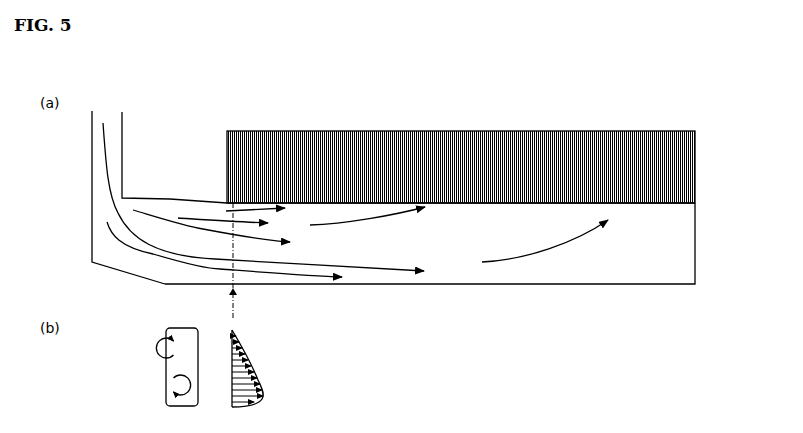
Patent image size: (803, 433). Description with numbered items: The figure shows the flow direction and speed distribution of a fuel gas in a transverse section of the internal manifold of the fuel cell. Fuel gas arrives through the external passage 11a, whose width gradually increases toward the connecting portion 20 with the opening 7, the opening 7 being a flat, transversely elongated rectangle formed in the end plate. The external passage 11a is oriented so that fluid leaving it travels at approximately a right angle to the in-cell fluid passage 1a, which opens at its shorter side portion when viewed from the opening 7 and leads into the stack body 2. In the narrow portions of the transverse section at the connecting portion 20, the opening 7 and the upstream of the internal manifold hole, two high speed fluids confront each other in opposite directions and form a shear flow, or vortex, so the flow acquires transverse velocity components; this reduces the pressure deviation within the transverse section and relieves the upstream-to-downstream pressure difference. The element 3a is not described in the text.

The external passage 11a is at (116, 128).
The stack body 2 is at (317, 130).
The in-cell fluid passage 1a is at (675, 203).
The connecting portion 20 is at (113, 280).
The opening 7 is at (192, 278).
The bottom surface 3a is at (443, 280).